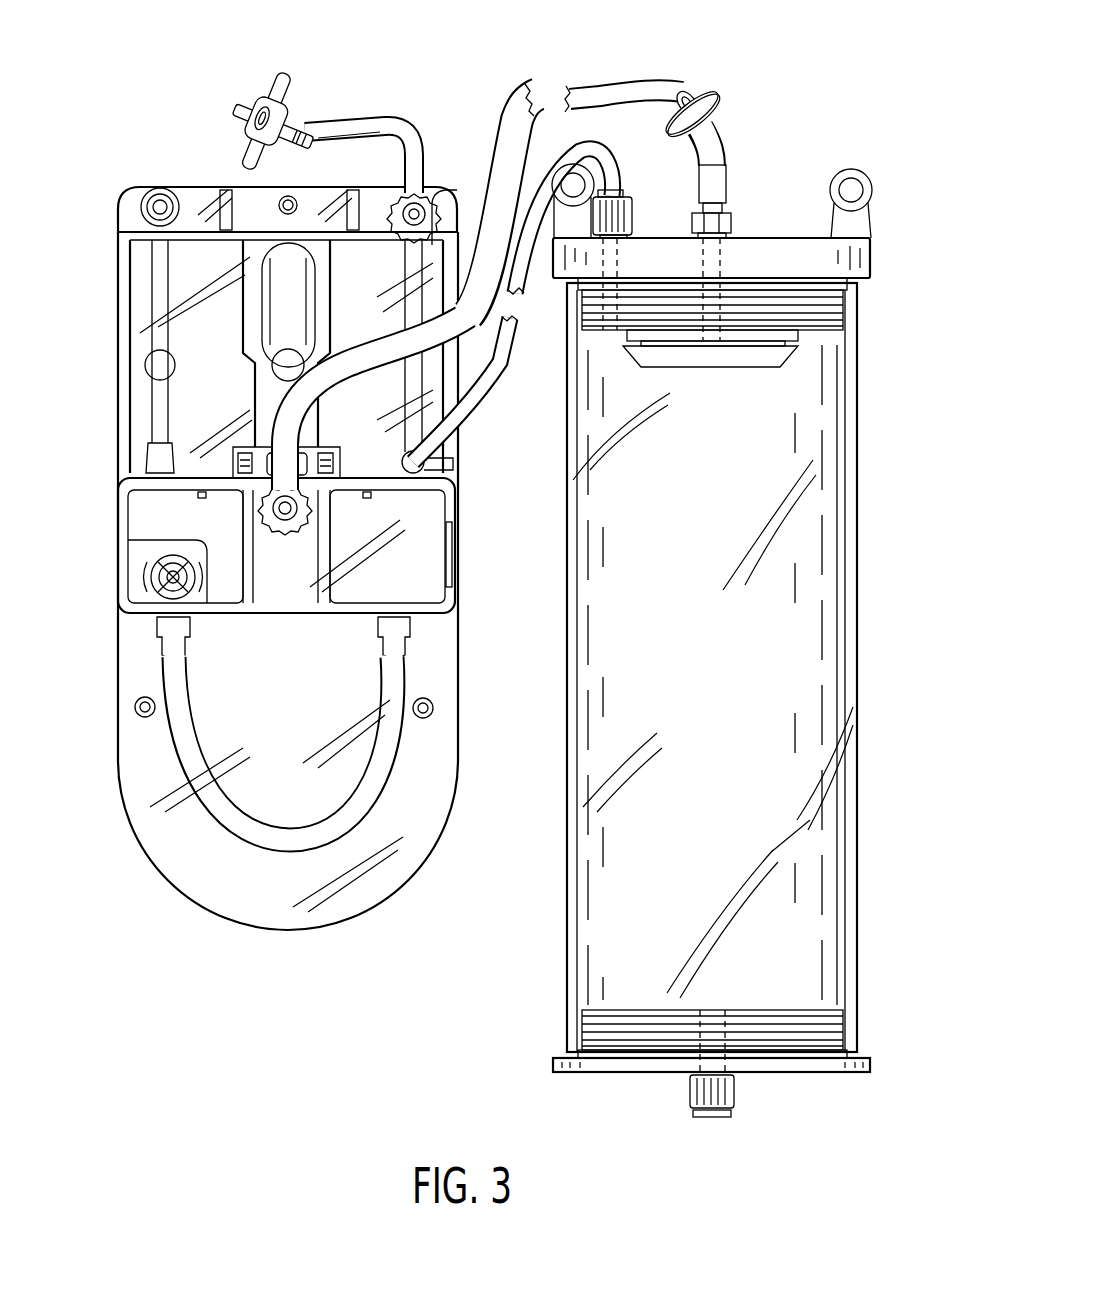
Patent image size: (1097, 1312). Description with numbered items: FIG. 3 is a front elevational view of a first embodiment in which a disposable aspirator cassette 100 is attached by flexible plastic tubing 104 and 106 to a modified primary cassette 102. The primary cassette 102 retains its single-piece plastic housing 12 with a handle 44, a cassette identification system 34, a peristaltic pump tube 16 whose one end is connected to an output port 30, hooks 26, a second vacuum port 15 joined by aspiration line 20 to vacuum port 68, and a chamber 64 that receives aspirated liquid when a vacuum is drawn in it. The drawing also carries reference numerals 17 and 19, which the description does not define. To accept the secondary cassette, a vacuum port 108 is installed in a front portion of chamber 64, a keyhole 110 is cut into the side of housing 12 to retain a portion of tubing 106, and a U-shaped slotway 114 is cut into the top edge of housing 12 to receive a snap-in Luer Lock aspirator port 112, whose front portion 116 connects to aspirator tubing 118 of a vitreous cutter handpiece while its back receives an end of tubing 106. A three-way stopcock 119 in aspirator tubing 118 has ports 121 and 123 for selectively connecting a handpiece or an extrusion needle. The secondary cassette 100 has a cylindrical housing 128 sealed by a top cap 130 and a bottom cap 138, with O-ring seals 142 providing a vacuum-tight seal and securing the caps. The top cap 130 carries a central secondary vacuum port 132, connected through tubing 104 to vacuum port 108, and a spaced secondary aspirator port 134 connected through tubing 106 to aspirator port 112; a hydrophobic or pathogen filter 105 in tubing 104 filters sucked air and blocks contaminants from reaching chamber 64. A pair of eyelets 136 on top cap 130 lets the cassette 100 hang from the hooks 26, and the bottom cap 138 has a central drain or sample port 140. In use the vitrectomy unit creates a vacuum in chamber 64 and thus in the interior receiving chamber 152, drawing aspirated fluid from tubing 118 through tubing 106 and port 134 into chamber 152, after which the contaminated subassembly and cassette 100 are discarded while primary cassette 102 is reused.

The housing 12 is at (183, 905).
The second vacuum port 15 is at (148, 193).
The peristaltic pump tube 16 is at (402, 755).
The tubing port 17 is at (402, 640).
The tubing port 19 is at (165, 642).
The aspiration line 20 is at (176, 365).
The hooks 26 is at (135, 712).
The output port 30 is at (150, 578).
The cassette identification system 34 is at (449, 584).
The handle 44 is at (337, 345).
The chamber 64 is at (297, 597).
The vacuum port 68 is at (150, 455).
The disposable aspirator cassette 100 is at (691, 607).
The modified primary cassette 102 is at (170, 158).
The tubing 104 is at (347, 391).
The hydrophobic and/or pathogen filter 105 is at (702, 118).
The tubing 106 is at (405, 274).
The vacuum port 108 is at (283, 527).
The keyhole 110 is at (402, 461).
The aspirator port 112 is at (442, 186).
The U-shaped slotway 114 is at (398, 217).
The front portion 116 is at (393, 212).
The aspirator tubing 118 is at (383, 124).
The three-way stopcock 119 is at (261, 93).
The port 121 is at (282, 80).
The port 123 is at (247, 148).
The tubular housing 128 is at (860, 527).
The top cap 130 is at (870, 262).
The secondary vacuum port 132 is at (734, 223).
The secondary aspirator port 134 is at (634, 215).
The eyelets 136 is at (851, 169).
The bottom cap 138 is at (870, 1069).
The drain or sample port 140 is at (737, 1099).
The O-ring seals 142 is at (846, 320).
The interior receiving chamber 152 is at (752, 648).